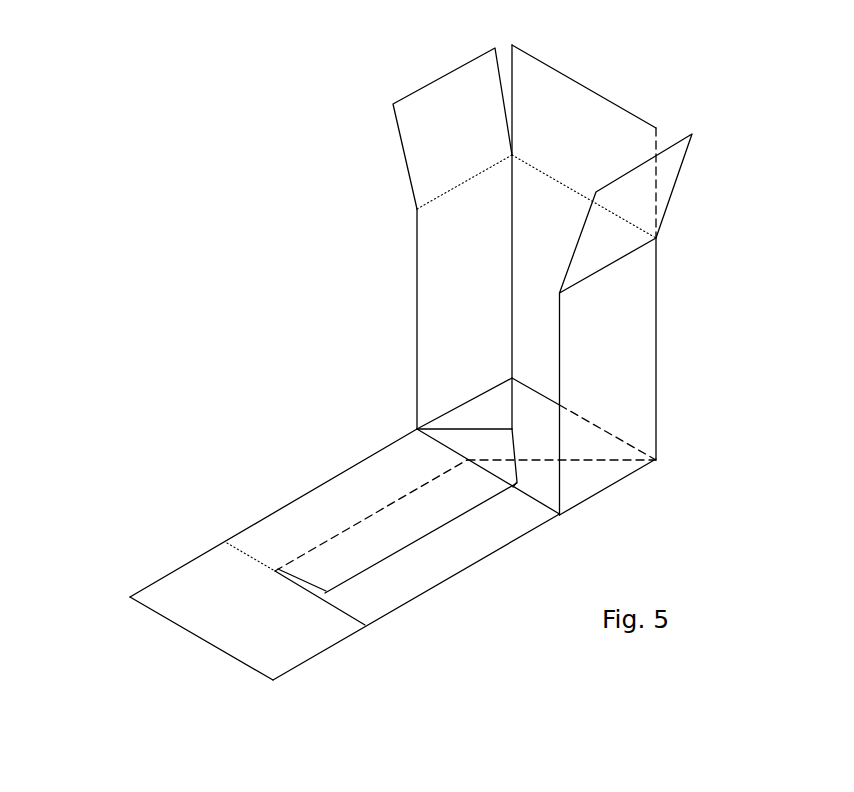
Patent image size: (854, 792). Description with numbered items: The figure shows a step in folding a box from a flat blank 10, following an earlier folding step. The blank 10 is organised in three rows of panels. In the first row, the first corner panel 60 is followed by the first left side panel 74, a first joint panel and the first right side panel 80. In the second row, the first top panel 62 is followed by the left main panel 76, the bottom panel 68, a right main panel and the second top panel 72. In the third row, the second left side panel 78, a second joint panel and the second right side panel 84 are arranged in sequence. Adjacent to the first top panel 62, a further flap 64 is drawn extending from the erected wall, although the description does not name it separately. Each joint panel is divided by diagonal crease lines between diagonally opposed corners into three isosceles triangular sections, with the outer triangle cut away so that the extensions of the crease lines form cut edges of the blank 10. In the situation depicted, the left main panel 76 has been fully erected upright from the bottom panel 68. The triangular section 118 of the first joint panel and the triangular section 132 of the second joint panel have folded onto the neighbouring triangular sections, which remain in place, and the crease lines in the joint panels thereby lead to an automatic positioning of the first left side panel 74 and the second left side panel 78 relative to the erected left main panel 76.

The blank 10 is at (156, 216).
The first corner panel 60 is at (462, 148).
The first top panel 62 is at (589, 154).
The corner flap 64 is at (678, 160).
The bottom panel 68 is at (528, 410).
The second top panel 72 is at (257, 622).
The first left side panel 74 is at (476, 284).
The left main panel 76 is at (559, 232).
The second left side panel 78 is at (619, 356).
The first right side panel 80 is at (298, 512).
The second right side panel 84 is at (455, 552).
The triangular section 118 is at (478, 415).
The triangular section 132 is at (580, 477).